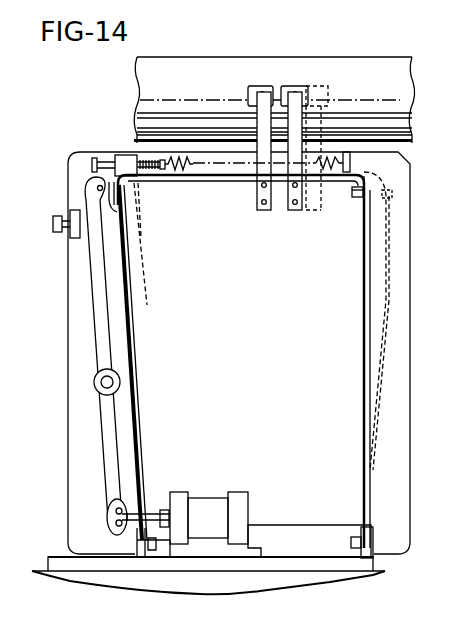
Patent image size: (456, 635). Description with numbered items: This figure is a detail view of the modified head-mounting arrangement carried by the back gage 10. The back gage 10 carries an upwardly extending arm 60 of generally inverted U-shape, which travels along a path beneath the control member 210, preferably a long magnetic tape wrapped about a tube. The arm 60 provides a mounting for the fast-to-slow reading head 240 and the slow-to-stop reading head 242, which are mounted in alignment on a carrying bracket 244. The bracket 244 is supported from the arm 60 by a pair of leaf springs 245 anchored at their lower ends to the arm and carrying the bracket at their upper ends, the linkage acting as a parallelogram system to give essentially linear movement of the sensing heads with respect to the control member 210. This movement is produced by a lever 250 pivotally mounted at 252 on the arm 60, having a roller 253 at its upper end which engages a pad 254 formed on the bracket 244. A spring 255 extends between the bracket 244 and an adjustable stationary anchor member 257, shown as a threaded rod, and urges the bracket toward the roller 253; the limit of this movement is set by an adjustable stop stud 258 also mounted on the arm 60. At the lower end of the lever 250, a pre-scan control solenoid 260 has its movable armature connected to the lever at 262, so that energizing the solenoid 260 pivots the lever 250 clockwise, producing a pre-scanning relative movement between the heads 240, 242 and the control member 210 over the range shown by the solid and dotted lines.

The back gage 10 is at (271, 578).
The arm 60 is at (74, 451).
The control member 210 is at (280, 52).
The fast-to-slow reading head 240 is at (254, 88).
The slow-to-stop reading head 242 is at (303, 86).
The carrying bracket 244 is at (277, 200).
The leaf springs 245 is at (117, 283).
The lever 250 is at (96, 334).
The pivot 252 is at (112, 381).
The roller 253 is at (98, 183).
The pad 254 is at (112, 205).
The spring 255 is at (166, 160).
The adjustable stationary anchor member 257 is at (100, 155).
The adjustable stop stud 258 is at (56, 223).
The pre-scan control solenoid 260 is at (210, 510).
The connection 262 is at (150, 508).